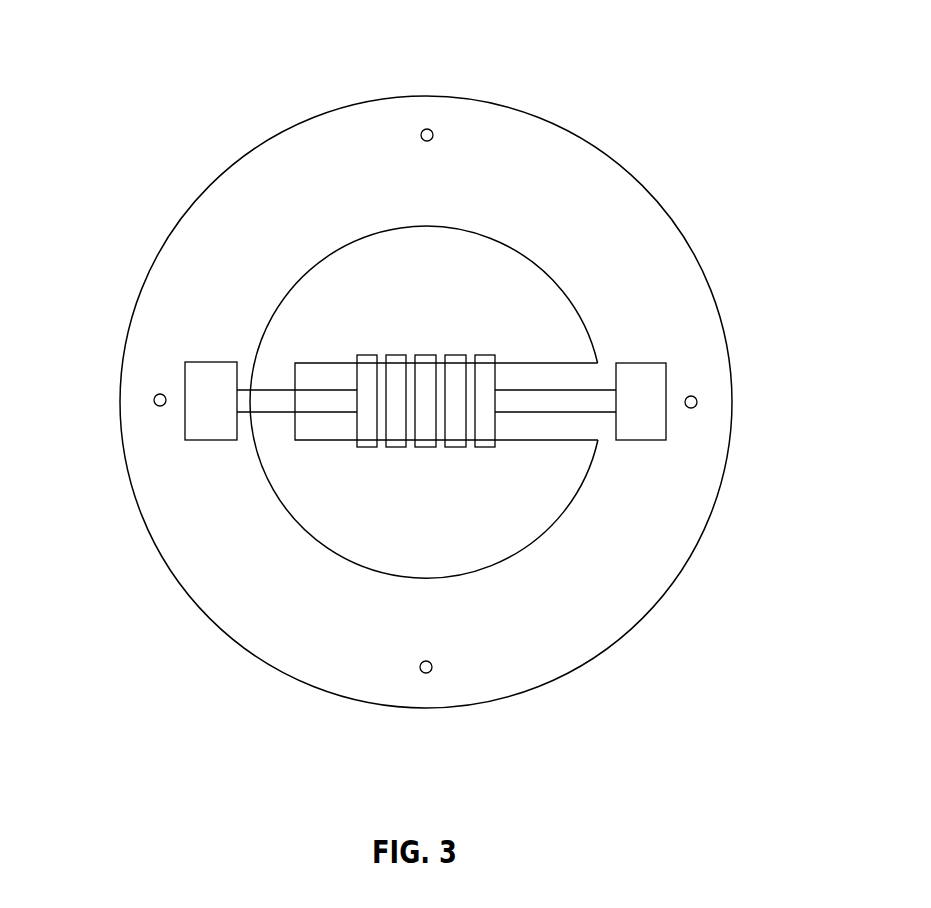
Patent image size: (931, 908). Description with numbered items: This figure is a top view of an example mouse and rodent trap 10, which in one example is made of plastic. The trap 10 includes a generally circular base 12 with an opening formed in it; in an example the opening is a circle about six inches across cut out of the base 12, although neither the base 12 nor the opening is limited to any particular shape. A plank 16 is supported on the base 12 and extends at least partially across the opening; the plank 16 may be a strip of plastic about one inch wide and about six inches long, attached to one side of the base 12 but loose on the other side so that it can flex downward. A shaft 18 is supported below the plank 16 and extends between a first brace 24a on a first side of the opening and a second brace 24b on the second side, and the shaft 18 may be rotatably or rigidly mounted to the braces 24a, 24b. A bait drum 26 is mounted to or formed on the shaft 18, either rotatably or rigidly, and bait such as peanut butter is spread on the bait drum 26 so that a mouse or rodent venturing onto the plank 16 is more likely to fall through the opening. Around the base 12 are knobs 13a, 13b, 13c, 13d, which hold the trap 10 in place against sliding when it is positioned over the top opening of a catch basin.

The mouse and rodent trap 10 is at (638, 105).
The base 12 is at (674, 222).
The knob 13a is at (426, 673).
The knob 13b is at (157, 394).
The knob 13c is at (427, 129).
The knob 13d is at (696, 397).
The plank 16 is at (518, 441).
The shaft 18 is at (272, 390).
The first brace 24a is at (642, 363).
The second brace 24b is at (222, 362).
The bait drum 26 is at (400, 355).